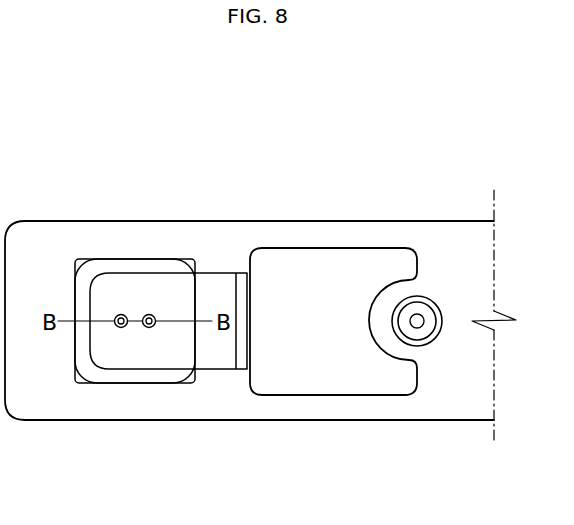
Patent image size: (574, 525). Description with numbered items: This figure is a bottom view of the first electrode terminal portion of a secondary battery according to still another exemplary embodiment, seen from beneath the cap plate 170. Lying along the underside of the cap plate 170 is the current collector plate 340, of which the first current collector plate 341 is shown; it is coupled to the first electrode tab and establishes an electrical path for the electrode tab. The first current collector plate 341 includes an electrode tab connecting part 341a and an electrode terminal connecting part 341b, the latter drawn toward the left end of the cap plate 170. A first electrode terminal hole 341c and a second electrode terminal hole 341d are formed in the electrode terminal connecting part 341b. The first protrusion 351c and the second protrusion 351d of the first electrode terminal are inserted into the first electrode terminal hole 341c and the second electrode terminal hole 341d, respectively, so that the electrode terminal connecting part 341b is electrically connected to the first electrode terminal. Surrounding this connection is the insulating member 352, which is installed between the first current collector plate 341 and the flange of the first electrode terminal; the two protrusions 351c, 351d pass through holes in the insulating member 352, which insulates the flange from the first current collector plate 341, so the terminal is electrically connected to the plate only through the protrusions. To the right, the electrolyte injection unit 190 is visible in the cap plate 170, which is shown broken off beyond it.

The cap plate 170 is at (40, 239).
The electrolyte injection unit 190 is at (423, 316).
The current collector plate 340 is at (125, 120).
The first current collector plate 341 is at (362, 145).
The electrode tab connecting part 341a is at (340, 268).
The electrode terminal connecting part 341b is at (217, 289).
The first electrode terminal hole 341c is at (150, 314).
The second electrode terminal hole 341d is at (120, 314).
The first protrusion 351c is at (150, 328).
The second protrusion 351d is at (121, 328).
The insulating member 352 is at (89, 363).